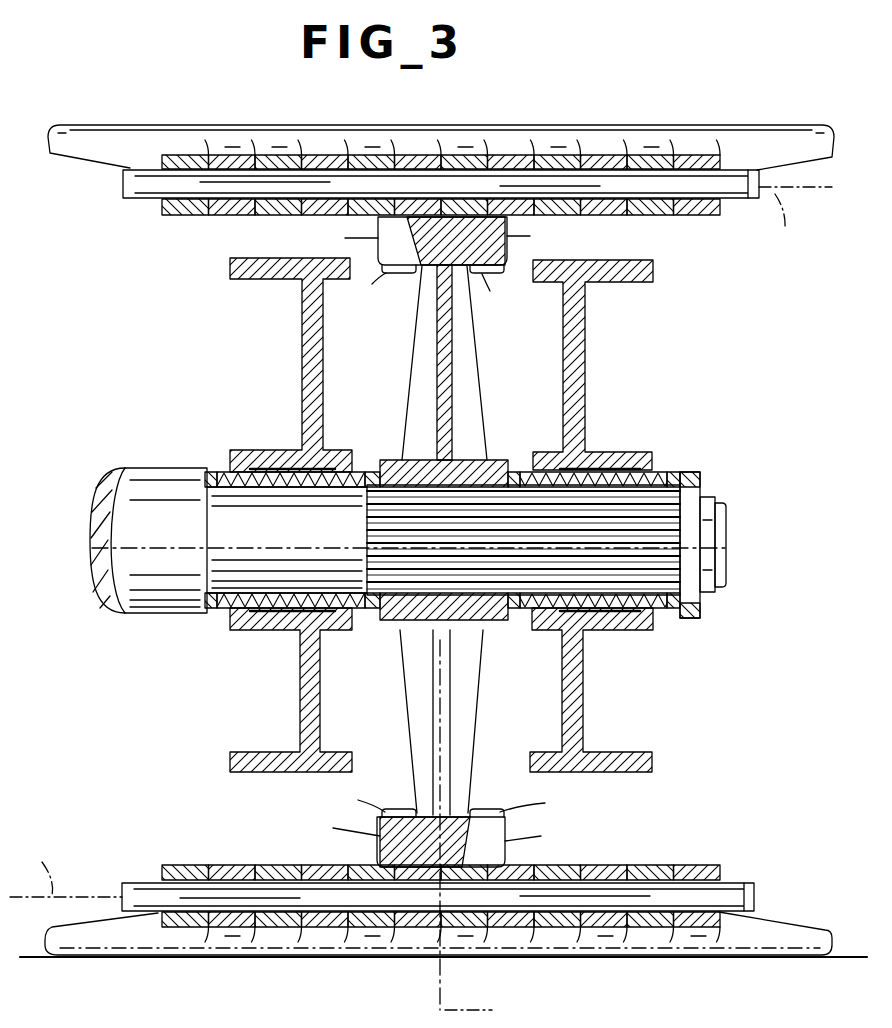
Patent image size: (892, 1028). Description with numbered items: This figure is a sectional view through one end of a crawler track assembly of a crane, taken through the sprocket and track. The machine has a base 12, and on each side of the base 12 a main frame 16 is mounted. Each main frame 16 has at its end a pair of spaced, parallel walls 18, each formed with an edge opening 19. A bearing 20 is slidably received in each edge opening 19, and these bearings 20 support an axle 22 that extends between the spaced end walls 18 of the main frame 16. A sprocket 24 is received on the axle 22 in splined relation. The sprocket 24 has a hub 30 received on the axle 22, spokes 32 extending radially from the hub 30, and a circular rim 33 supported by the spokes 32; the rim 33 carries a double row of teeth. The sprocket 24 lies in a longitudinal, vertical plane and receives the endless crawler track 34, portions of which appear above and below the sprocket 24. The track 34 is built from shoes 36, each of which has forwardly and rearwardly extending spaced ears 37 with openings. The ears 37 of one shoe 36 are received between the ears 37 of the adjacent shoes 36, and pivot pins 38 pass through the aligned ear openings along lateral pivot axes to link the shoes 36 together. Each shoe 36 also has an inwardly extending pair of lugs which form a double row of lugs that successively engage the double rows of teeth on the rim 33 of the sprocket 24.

The base 12 is at (704, 76).
The main frame 16 is at (590, 325).
The spaced parallel walls 18 is at (448, 515).
The edge opening 19 is at (278, 607).
The bearing 20 is at (220, 463).
The axle 22 is at (116, 543).
The sprocket 24 is at (456, 362).
The hub 30 is at (492, 462).
The spokes 32 is at (437, 326).
The circular rim 33 is at (420, 267).
The endless crawler track 34 is at (107, 121).
The shoe 36 is at (752, 127).
The ears 37 is at (258, 216).
The pivot pin 38 is at (123, 186).